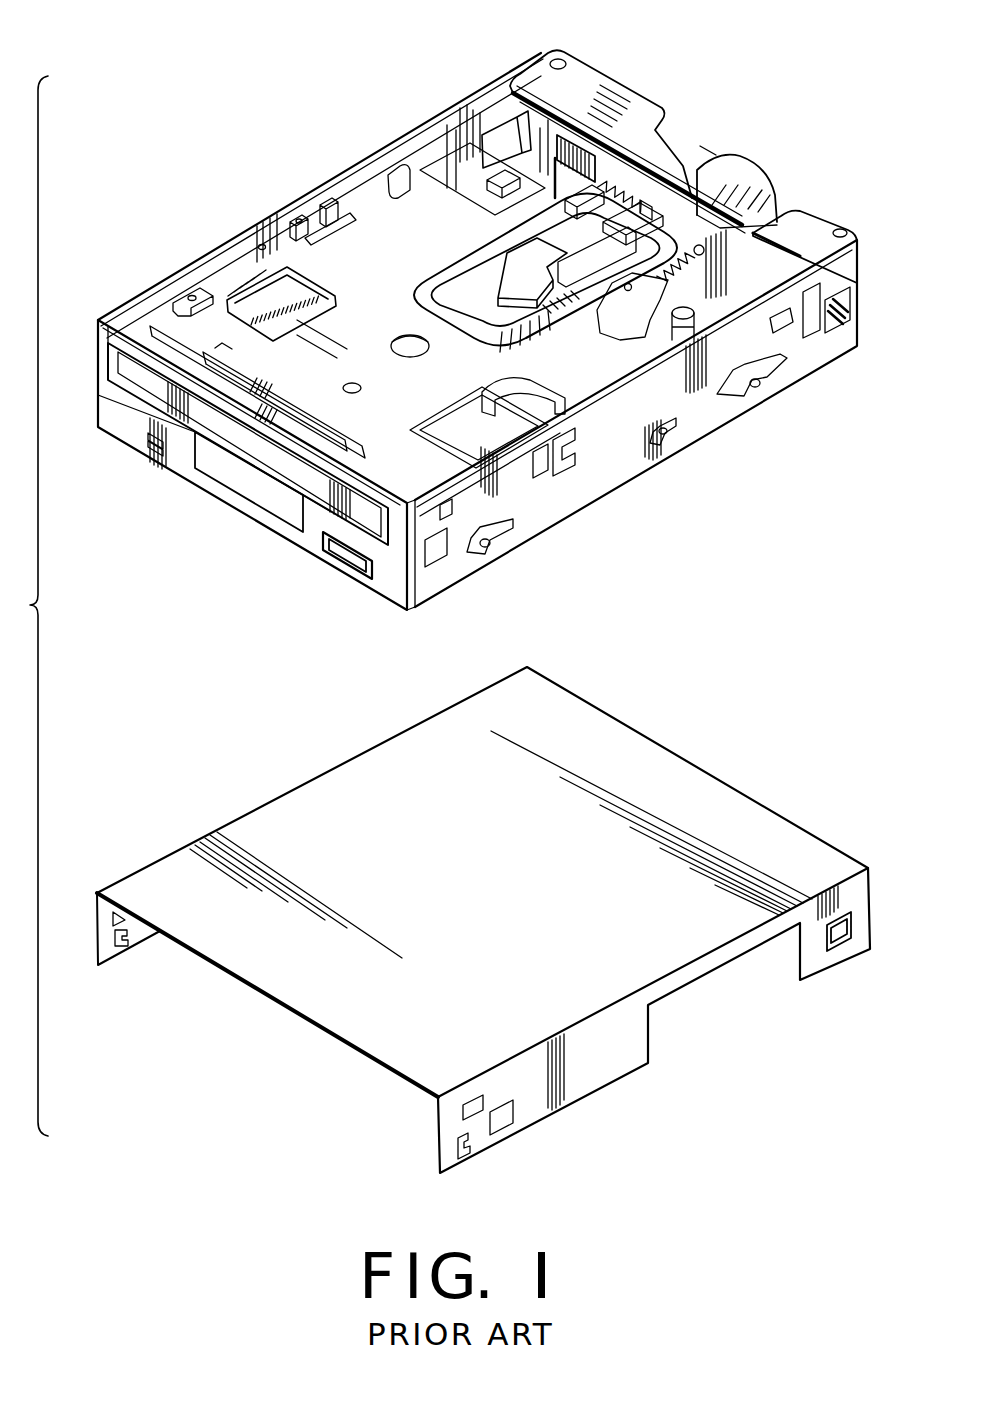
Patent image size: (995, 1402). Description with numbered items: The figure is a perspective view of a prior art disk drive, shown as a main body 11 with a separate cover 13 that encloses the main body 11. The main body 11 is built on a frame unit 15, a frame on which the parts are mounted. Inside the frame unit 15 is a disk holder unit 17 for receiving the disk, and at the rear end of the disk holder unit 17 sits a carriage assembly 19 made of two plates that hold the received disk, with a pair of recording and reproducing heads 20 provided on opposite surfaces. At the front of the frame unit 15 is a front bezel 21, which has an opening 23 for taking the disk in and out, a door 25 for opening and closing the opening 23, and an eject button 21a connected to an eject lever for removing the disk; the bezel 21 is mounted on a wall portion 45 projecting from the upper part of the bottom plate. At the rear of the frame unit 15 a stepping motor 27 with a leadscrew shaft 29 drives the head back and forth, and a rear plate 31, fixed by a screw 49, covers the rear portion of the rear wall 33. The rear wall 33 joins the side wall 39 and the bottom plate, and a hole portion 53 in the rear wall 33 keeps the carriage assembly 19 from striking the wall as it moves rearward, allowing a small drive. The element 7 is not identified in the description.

The positioning pin 7 is at (705, 310).
The main body 11 is at (692, 108).
The cover 13 is at (646, 735).
The frame unit 15 is at (722, 426).
The disk holder unit 17 is at (371, 200).
The carriage assembly 19 is at (600, 188).
The heads 20 is at (550, 250).
The front bezel 21 is at (97, 312).
The eject button 21a is at (330, 565).
The opening 23 is at (98, 362).
The door 25 is at (127, 395).
The stepping motor 27 is at (760, 187).
The leadscrew shaft 29 is at (683, 257).
The rear plate 31 is at (575, 60).
The rear wall 33 is at (527, 137).
The side wall 39 is at (803, 283).
The wall portion 45 is at (773, 377).
The screw 49 is at (840, 228).
The hole portion 53 is at (560, 145).